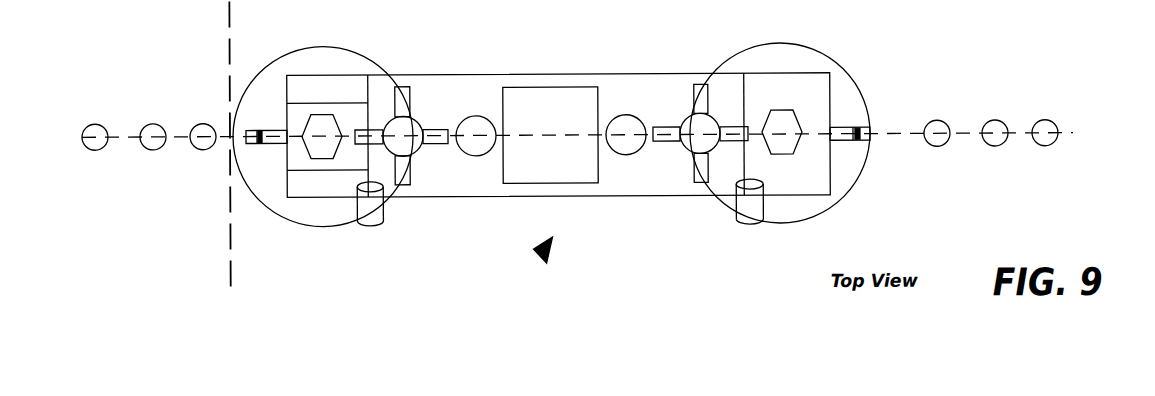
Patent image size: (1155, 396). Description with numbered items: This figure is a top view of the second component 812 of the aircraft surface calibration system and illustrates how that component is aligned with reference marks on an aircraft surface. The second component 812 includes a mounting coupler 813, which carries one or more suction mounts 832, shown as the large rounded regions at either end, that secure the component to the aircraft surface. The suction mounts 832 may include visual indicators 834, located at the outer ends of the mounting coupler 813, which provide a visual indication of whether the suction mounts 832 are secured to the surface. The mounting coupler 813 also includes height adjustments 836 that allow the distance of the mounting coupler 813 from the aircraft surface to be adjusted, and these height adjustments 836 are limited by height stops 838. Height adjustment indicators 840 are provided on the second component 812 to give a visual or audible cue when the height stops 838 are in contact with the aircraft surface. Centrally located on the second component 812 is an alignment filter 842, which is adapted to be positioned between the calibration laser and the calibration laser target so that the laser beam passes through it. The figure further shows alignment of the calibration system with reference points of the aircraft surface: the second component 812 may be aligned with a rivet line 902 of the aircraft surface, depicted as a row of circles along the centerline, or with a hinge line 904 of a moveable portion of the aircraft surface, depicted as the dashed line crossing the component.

The second component 812 is at (541, 254).
The mounting coupler 813 is at (502, 73).
The suction mounts 832 is at (855, 84).
The visual indicators 834 is at (866, 135).
The height adjustments 836 is at (402, 88).
The height stops 838 is at (622, 157).
The height adjustment indicators 840 is at (377, 222).
The alignment filter 842 is at (597, 85).
The rivet line 902 is at (1042, 120).
The hinge line 904 is at (228, 195).